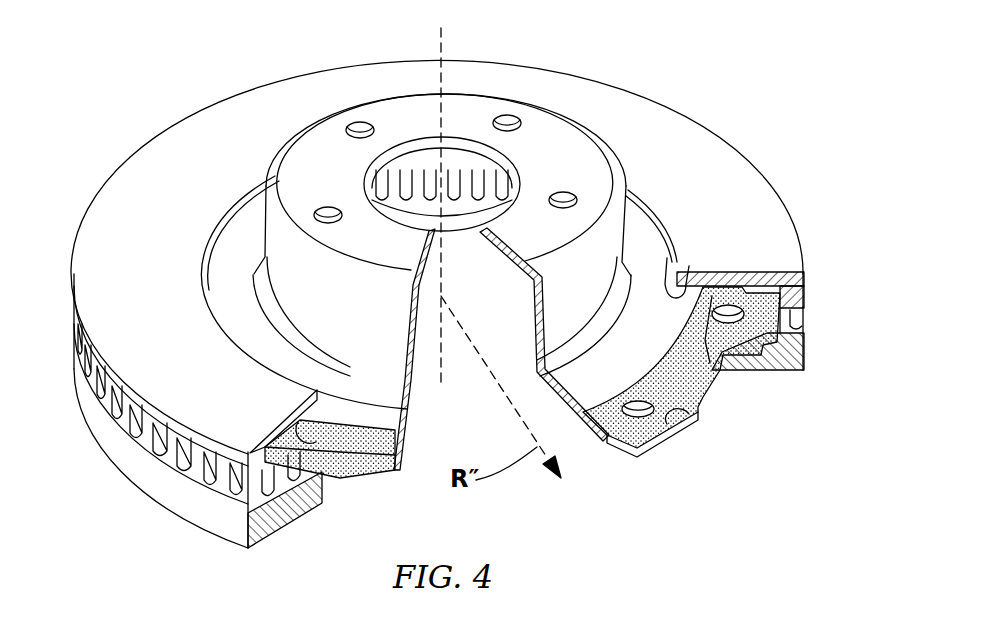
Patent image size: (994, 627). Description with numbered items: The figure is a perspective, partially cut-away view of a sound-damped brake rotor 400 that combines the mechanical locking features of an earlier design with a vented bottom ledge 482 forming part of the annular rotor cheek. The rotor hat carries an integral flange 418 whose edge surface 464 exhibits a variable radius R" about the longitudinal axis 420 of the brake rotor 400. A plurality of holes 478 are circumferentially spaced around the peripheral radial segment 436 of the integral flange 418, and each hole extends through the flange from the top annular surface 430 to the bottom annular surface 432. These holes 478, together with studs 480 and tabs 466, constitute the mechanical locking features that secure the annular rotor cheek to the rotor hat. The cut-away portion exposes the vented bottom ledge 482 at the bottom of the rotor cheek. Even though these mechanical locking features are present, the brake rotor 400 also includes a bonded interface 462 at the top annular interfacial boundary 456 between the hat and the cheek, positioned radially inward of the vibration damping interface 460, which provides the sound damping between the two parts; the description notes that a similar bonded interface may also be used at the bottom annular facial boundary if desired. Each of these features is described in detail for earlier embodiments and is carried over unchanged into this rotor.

The brake rotor 400 is at (182, 104).
The longitudinal axis 420 is at (442, 43).
The integral flange 418 is at (417, 398).
The top annular surface 430 is at (585, 373).
The bottom annular surface 432 is at (567, 413).
The peripheral radial segment 436 is at (380, 445).
The top annular interfacial boundary 456 is at (717, 370).
The vibration damping interface 460 is at (716, 285).
The bonded interface 462 is at (670, 260).
The edge surface 464 is at (676, 458).
The tabs 466 is at (700, 422).
The holes 478 is at (327, 457).
The studs 480 is at (247, 452).
The vented bottom ledge 482 is at (274, 482).